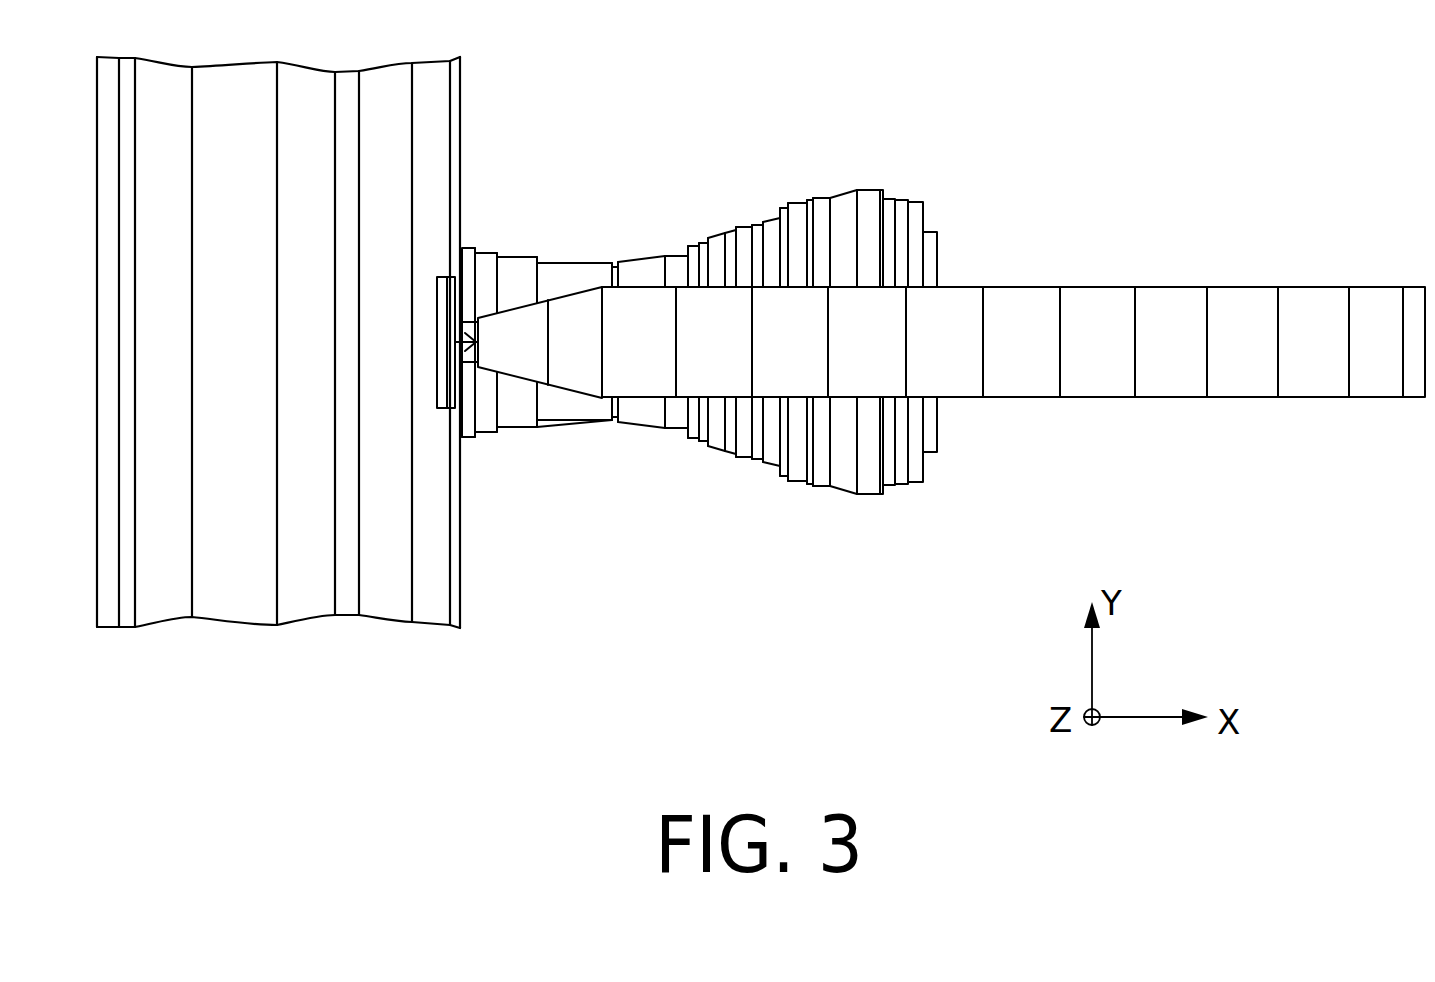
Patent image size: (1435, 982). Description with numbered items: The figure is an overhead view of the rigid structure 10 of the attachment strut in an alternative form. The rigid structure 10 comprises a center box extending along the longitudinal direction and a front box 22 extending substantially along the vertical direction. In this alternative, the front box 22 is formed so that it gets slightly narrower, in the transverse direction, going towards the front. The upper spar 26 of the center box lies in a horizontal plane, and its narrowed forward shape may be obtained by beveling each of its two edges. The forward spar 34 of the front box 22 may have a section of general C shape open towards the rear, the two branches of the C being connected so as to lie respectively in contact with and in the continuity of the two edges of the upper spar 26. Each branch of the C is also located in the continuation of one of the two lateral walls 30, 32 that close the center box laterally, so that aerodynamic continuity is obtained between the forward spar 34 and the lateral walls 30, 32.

The rigid structure 10 is at (1128, 205).
The front box 22 is at (585, 278).
The upper spar 26 is at (622, 372).
The lateral wall 30 is at (550, 393).
The lateral wall 32 is at (533, 297).
The forward spar 34 is at (438, 353).